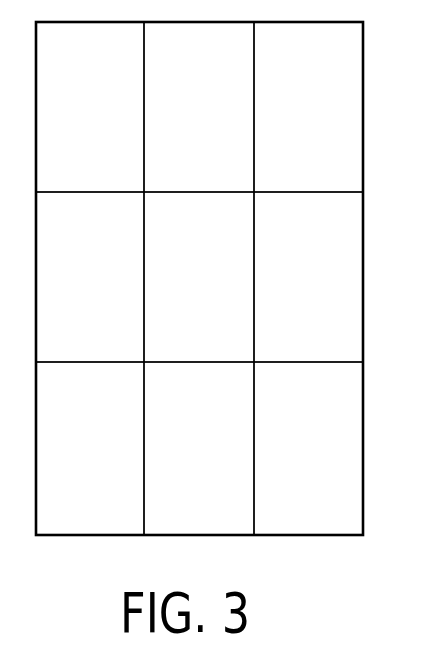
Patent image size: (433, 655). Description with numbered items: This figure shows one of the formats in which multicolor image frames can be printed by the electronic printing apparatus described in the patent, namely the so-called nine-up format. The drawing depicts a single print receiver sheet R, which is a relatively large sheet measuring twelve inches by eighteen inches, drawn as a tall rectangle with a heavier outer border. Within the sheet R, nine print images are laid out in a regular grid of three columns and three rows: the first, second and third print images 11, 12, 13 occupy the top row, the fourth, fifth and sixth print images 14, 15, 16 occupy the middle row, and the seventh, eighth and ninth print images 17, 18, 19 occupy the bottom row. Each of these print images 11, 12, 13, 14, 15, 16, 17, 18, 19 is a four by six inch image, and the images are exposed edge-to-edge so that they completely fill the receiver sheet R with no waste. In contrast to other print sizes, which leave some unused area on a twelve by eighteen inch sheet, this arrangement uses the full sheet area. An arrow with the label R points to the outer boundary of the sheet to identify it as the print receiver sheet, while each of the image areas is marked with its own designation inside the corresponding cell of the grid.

The print image I1' 11 is at (103, 110).
The print image I2' 12 is at (215, 110).
The print image I3' 13 is at (322, 110).
The print image I4' 14 is at (103, 292).
The print image I5' 15 is at (215, 292).
The print image I6' 16 is at (322, 292).
The print image I7' 17 is at (103, 460).
The print image I8' 18 is at (215, 460).
The print image I9' 19 is at (322, 460).
The print receiver sheet R is at (372, 346).